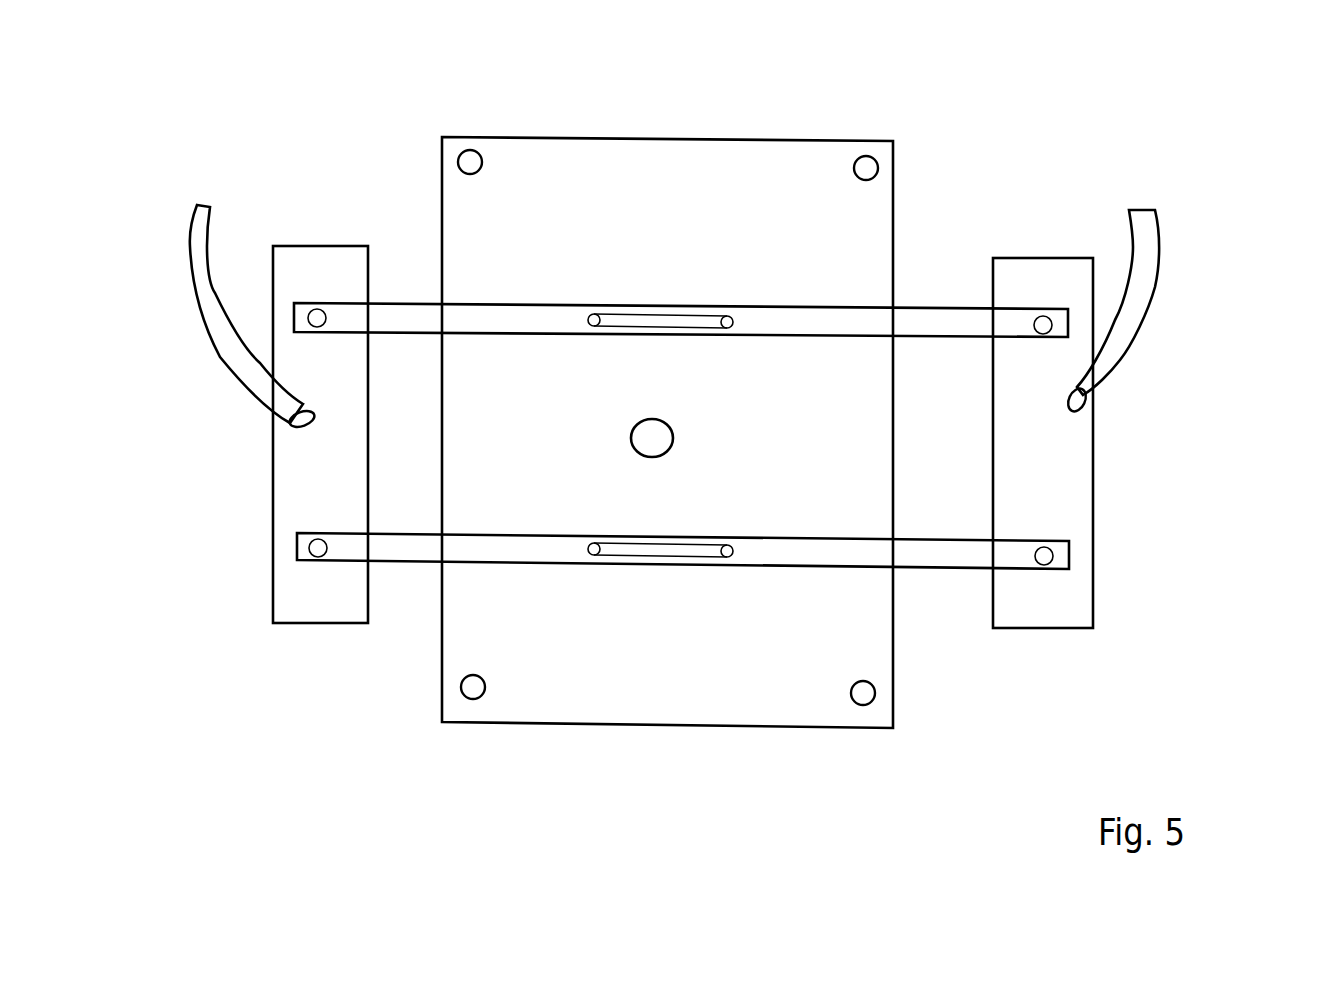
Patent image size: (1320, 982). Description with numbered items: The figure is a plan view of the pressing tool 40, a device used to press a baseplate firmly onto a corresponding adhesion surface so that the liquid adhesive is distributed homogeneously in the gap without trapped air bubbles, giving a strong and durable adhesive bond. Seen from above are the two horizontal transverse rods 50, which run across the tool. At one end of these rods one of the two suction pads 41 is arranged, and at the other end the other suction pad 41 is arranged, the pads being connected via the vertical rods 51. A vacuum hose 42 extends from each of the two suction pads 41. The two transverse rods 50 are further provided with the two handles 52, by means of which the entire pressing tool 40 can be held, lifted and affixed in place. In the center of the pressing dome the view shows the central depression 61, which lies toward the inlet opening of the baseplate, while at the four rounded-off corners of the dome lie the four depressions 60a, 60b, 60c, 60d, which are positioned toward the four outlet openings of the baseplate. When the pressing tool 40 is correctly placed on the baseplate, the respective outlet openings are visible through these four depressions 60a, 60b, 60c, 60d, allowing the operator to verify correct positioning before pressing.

The pressing tool 40 is at (1160, 160).
The suction pad 41 is at (1058, 503).
The vacuum hose 42 is at (200, 279).
The transverse rod 50 is at (935, 553).
The vertical rod 51 is at (318, 548).
The handle 52 is at (662, 550).
The depression 60a is at (473, 687).
The depression 60b is at (471, 162).
The depression 60c is at (868, 168).
The depression 60d is at (863, 693).
The central depression 61 is at (652, 438).